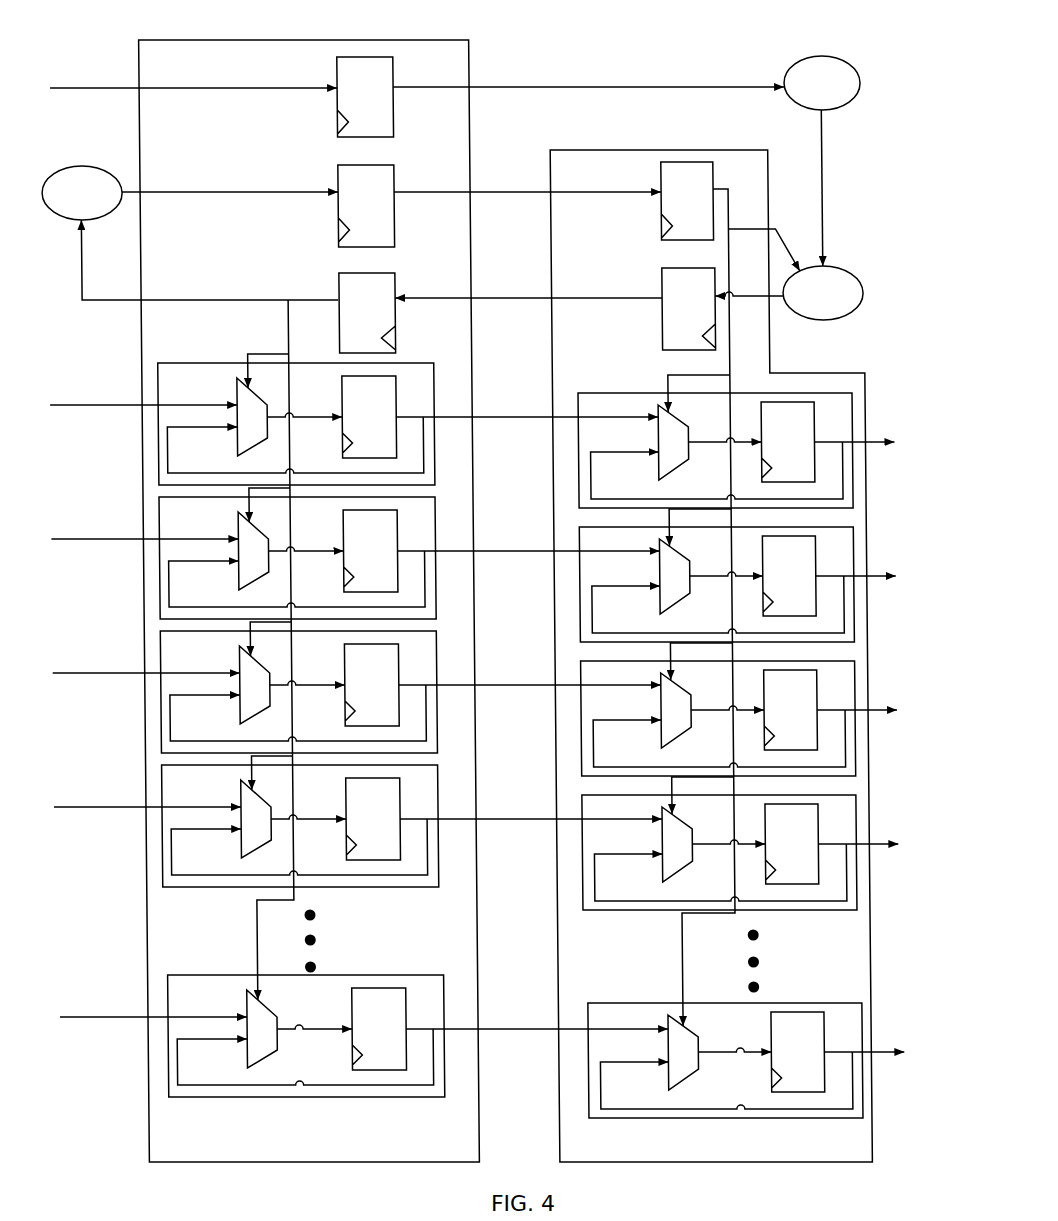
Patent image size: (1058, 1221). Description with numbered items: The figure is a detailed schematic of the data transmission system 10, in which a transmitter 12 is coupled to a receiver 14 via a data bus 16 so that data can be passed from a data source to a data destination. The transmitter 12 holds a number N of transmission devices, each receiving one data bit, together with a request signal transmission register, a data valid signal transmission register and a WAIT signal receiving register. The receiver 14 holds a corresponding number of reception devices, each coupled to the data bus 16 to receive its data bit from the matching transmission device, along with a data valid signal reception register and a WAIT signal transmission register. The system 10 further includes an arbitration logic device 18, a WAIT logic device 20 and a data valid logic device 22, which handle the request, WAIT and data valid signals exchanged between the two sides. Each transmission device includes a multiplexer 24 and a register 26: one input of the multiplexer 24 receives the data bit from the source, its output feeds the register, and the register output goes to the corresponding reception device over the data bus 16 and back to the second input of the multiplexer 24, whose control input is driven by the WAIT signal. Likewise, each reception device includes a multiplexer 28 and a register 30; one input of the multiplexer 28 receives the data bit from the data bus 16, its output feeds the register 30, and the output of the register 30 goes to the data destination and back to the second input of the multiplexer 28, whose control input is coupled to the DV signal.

The data transmission system 10 is at (622, 35).
The transmitter 12 is at (289, 39).
The receiver 14 is at (642, 150).
The data bus 16 is at (505, 66).
The arbitration logic device 18 is at (823, 57).
The WAIT logic device 20 is at (868, 290).
The data valid logic device 22 is at (86, 166).
The multiplexer 24 is at (261, 429).
The register 26 is at (379, 427).
The multiplexer 28 is at (683, 450).
The register 30 is at (799, 449).